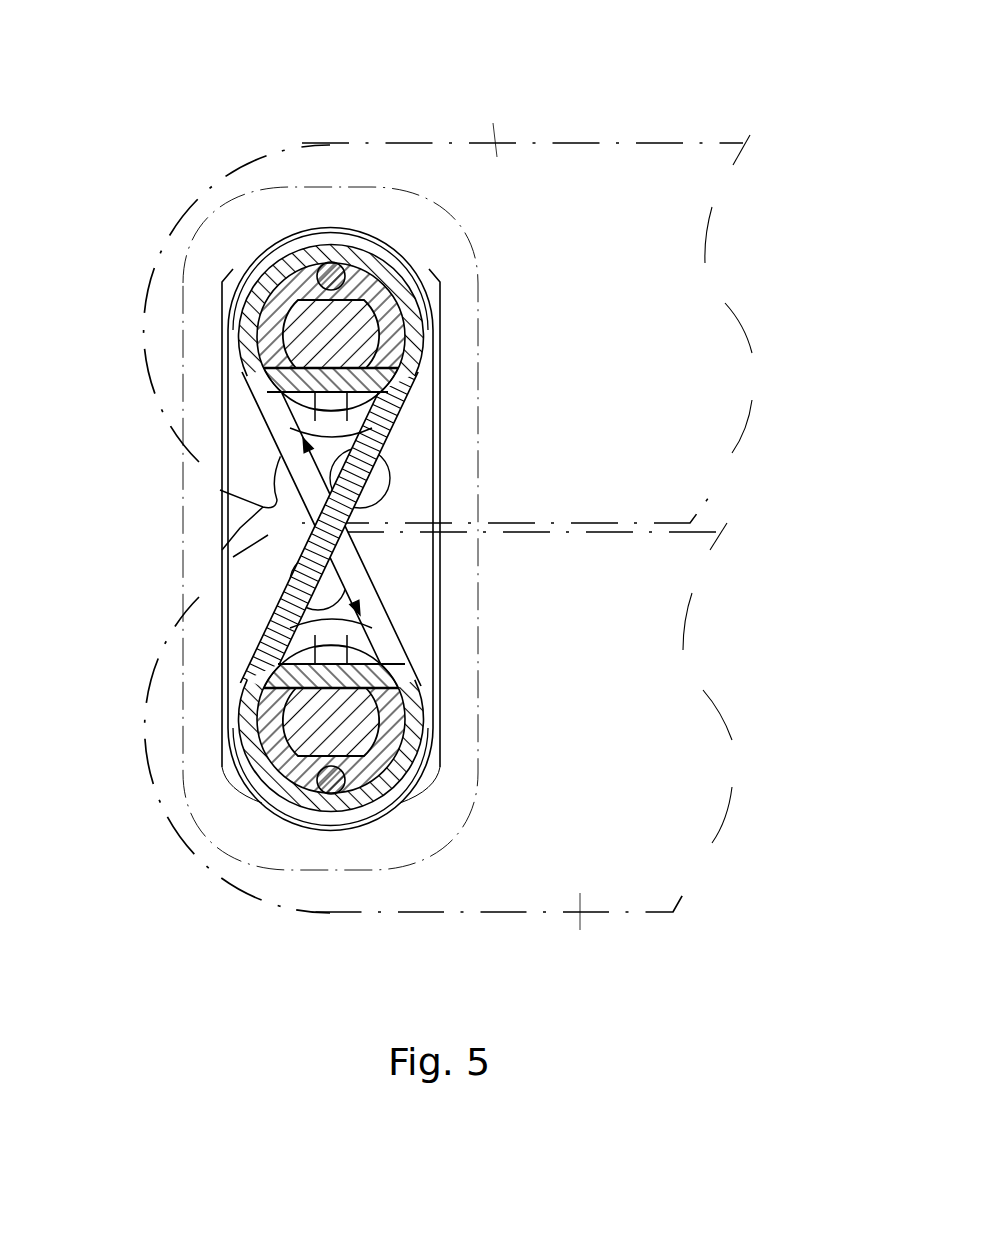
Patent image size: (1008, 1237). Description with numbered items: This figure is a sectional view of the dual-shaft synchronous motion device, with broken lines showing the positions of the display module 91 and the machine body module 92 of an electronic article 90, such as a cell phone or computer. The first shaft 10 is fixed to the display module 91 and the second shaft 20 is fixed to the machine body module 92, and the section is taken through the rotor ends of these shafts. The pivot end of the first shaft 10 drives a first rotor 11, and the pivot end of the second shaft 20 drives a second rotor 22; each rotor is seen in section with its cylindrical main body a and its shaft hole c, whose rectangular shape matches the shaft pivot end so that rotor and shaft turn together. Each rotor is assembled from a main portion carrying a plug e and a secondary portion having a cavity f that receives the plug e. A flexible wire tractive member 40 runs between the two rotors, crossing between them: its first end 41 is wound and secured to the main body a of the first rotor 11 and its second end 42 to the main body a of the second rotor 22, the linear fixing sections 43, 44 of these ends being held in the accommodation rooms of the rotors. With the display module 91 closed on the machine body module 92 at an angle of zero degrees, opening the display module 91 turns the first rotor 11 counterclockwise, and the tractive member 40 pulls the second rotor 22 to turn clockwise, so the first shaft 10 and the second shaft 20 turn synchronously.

The first shaft 10 is at (408, 303).
The second shaft 20 is at (410, 713).
The first rotor 11 is at (275, 466).
The second rotor 22 is at (405, 610).
The tractive member 40 is at (290, 498).
The first end 41 is at (247, 317).
The second end 42 is at (255, 838).
The fixing section 43 is at (262, 377).
The fixing section 44 is at (432, 660).
The electronic article 90 is at (583, 143).
The display module 91 is at (493, 140).
The machine body module 92 is at (582, 945).
The main body a is at (382, 330).
The shaft hole c is at (250, 262).
The plug e is at (326, 262).
The cavity f is at (417, 213).